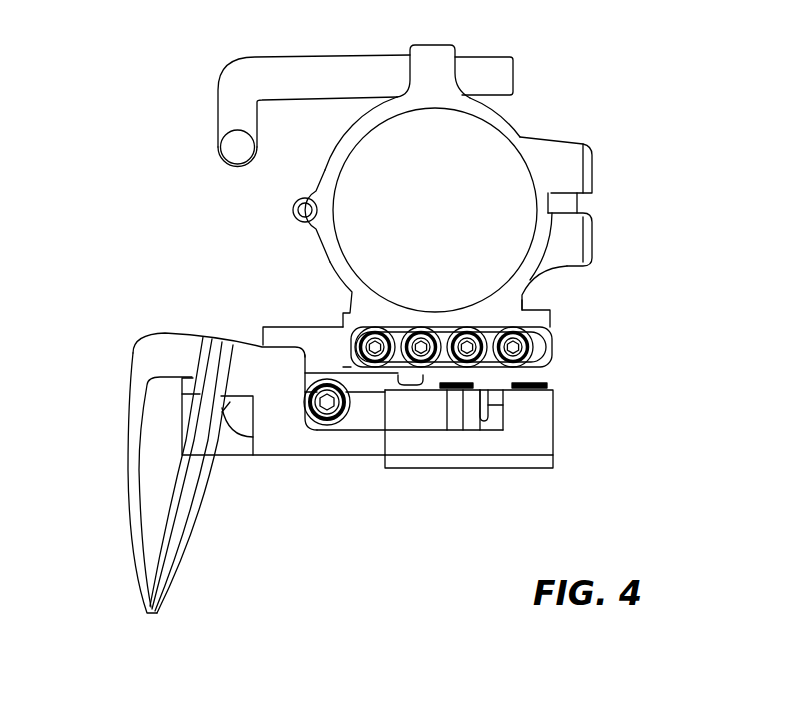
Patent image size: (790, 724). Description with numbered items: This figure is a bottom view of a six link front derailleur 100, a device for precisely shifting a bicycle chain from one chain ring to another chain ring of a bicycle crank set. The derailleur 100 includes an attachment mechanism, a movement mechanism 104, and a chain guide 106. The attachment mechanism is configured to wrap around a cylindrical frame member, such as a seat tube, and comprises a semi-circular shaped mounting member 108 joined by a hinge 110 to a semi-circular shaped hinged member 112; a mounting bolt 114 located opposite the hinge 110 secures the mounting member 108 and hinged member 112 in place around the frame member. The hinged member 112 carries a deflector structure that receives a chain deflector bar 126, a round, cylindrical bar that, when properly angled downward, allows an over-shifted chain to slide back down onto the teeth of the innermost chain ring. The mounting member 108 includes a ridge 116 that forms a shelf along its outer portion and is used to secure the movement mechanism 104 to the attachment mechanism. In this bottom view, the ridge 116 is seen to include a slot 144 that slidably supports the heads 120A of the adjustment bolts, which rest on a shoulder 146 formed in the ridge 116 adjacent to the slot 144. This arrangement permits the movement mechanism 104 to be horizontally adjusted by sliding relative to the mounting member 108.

The six link front derailleur 100 is at (118, 176).
The movement mechanism 104 is at (332, 456).
The chain guide 106 is at (188, 517).
The mounting member 108 is at (335, 260).
The hinge 110 is at (292, 218).
The hinged member 112 is at (492, 120).
The mounting bolt 114 is at (567, 210).
The ridge 116 is at (537, 317).
The heads of adjustment bolts 120A is at (513, 333).
The chain deflector bar 126 is at (273, 77).
The slot 144 is at (496, 352).
The shoulder 146 is at (538, 338).